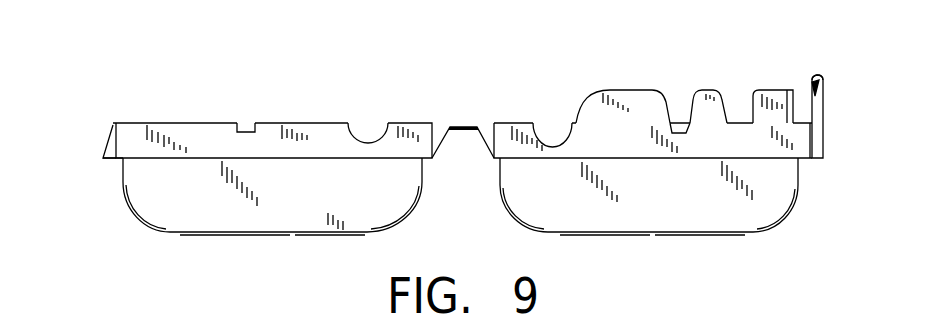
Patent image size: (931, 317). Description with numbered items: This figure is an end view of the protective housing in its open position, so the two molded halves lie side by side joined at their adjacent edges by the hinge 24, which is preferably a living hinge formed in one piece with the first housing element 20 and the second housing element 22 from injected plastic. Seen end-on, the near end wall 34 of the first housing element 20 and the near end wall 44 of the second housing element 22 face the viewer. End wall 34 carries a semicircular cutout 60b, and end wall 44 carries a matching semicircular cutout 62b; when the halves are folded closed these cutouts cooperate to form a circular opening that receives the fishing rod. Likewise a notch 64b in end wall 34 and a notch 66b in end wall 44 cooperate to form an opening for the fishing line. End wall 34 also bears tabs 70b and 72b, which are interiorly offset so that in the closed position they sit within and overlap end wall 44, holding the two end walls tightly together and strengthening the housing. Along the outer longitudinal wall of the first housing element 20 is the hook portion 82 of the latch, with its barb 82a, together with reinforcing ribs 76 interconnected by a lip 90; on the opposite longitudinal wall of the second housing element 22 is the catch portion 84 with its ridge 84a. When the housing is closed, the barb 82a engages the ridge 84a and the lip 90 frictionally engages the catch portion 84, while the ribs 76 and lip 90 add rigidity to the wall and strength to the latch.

The first housing element 20 is at (790, 228).
The second housing element 22 is at (131, 226).
The hinge 24 is at (452, 126).
The end wall 34 is at (660, 205).
The end wall 44 is at (290, 232).
The semicircular cutout 60b is at (568, 143).
The semicircular cutout 62b is at (382, 140).
The notch 64b is at (676, 125).
The notch 66b is at (243, 123).
The tab 70b is at (617, 90).
The tab 72b is at (707, 90).
The reinforcing ribs 76 is at (770, 90).
The hook portion 82 is at (823, 118).
The barb 82a is at (817, 88).
The catch portion 84 is at (105, 142).
The ridge 84a is at (112, 160).
The lip 90 is at (812, 80).